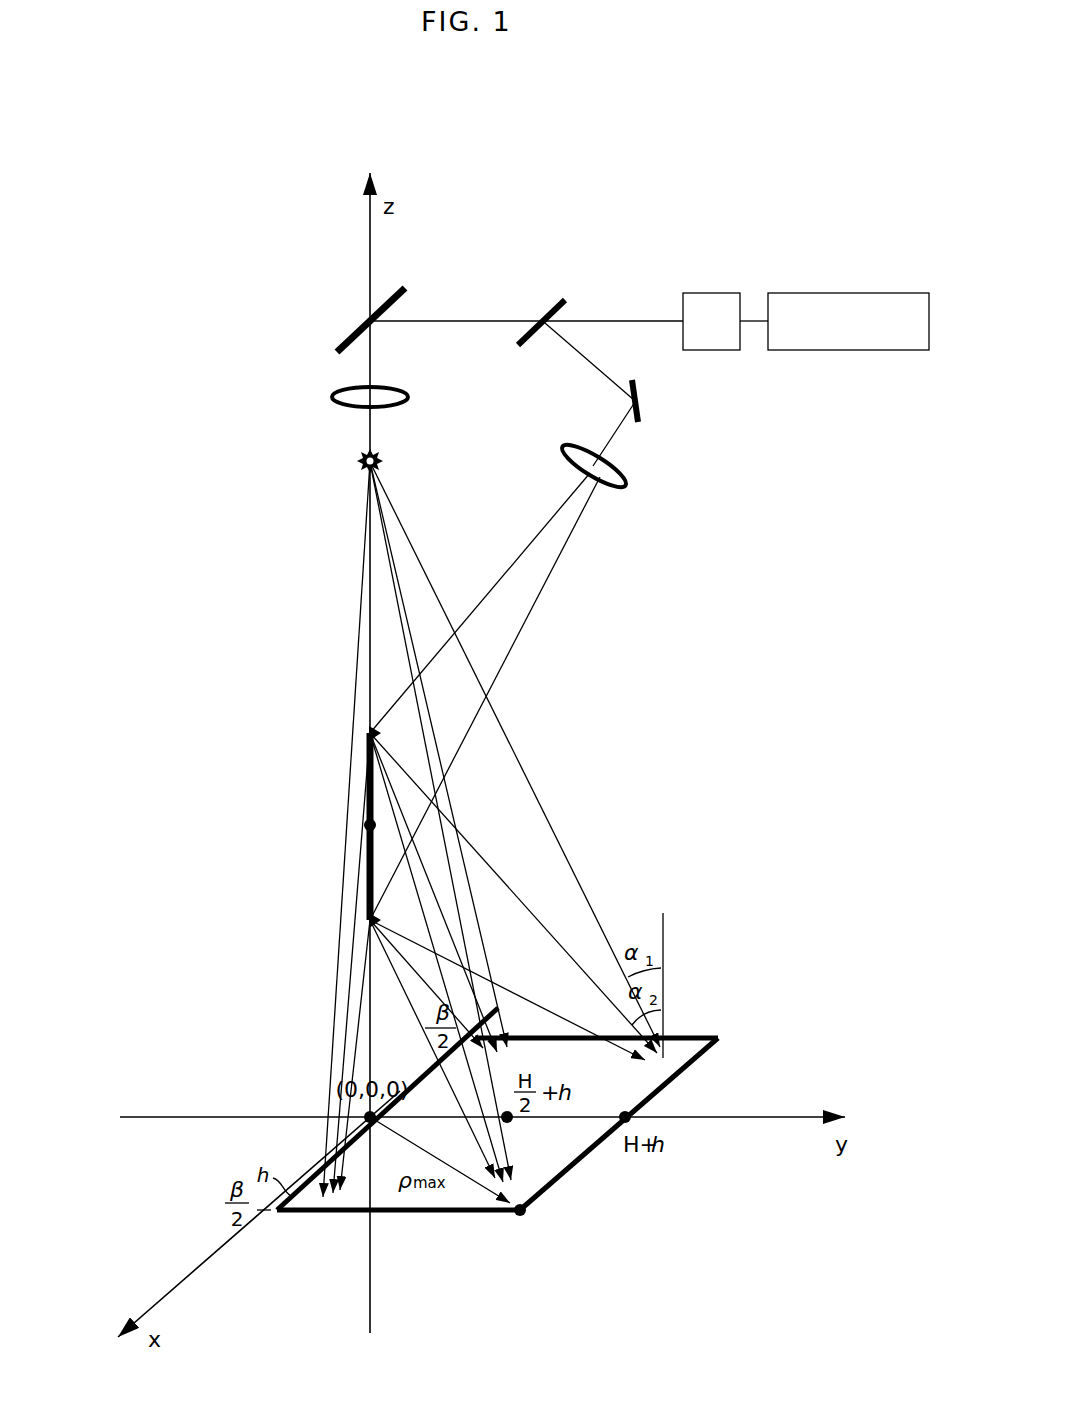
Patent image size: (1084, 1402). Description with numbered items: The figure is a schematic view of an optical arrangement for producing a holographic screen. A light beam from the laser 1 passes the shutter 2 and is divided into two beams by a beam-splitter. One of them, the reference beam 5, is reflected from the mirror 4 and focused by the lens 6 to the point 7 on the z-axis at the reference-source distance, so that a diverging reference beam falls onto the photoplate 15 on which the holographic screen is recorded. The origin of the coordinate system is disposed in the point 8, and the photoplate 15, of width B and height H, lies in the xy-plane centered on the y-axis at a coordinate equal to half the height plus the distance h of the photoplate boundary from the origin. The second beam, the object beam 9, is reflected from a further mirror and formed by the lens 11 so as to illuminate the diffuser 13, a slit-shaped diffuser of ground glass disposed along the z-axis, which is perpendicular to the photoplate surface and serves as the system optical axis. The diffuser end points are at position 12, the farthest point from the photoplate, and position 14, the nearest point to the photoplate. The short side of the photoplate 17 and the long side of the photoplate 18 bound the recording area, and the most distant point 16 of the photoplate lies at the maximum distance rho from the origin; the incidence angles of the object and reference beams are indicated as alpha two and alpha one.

The laser 1 is at (848, 293).
The shutter 2 is at (710, 293).
The mirror 4 is at (402, 290).
The reference beam 5 is at (554, 298).
The lens 6 is at (340, 396).
The point 7 is at (360, 461).
The point 8 is at (366, 1116).
The object beam 9 is at (588, 350).
The lens 11 is at (630, 476).
The diffuser end point 12 is at (367, 733).
The diffuser 13 is at (364, 825).
The diffuser end point 14 is at (367, 920).
The photoplate 15 is at (669, 1076).
The most distant point of the photoplate 16 is at (521, 1215).
The short side of the photoplate 17 is at (424, 1212).
The long side of the photoplate 18 is at (579, 1160).